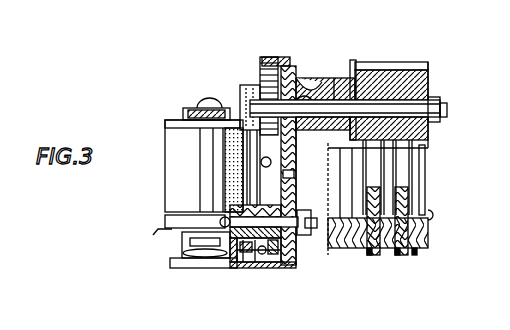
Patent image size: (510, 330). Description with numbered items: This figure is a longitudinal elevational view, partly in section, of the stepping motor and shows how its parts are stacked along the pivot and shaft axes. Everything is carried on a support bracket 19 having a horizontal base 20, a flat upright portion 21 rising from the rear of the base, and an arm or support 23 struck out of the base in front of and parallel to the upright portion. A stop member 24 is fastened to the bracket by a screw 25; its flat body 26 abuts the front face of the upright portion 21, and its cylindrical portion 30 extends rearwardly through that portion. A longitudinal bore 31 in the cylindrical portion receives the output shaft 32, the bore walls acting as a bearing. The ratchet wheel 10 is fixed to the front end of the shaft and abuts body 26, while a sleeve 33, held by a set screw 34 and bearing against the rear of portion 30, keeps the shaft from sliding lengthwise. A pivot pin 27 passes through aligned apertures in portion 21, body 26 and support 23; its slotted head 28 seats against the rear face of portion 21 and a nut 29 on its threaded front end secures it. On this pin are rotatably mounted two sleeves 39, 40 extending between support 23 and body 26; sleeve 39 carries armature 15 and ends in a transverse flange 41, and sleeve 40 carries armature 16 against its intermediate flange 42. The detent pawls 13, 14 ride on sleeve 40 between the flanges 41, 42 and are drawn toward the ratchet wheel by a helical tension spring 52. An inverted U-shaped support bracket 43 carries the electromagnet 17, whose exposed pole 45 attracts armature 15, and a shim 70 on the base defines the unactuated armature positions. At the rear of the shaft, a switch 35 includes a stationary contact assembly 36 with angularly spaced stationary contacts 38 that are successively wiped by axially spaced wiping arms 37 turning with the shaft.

The ratchet wheel 10 is at (257, 75).
The detent pawl 13 is at (242, 187).
The detent pawl 14 is at (235, 167).
The armature 15 is at (222, 194).
The armature 16 is at (295, 270).
The electromagnet 17 is at (196, 189).
The support bracket 19 is at (300, 265).
The horizontal base 20 is at (177, 268).
The flat upright portion 21 is at (284, 200).
The arm or support 23 is at (231, 265).
The stop member 24 is at (277, 58).
The screw 25 is at (288, 174).
The flat body 26 is at (284, 143).
The pivot pin 27 is at (233, 211).
The slotted head 28 is at (301, 264).
The nut 29 is at (167, 228).
The cylindrical portion 30 is at (316, 88).
The longitudinal bore 31 is at (300, 82).
The output shaft 32 is at (335, 88).
The sleeve 33 is at (372, 65).
The set screw 34 is at (357, 63).
The switch 35 is at (437, 141).
The stationary contact assembly 36 is at (430, 193).
The wiping arms 37 is at (426, 160).
The stationary contacts 38 is at (402, 252).
The sleeve 39 is at (240, 268).
The sleeve 40 is at (268, 265).
The transverse flange 41 is at (262, 267).
The transverse flange 42 is at (274, 266).
The inverted U-shaped support bracket 43 is at (186, 107).
The exposed pole 45 is at (187, 243).
The helical tension spring 52 is at (232, 153).
The shim 70 is at (290, 280).